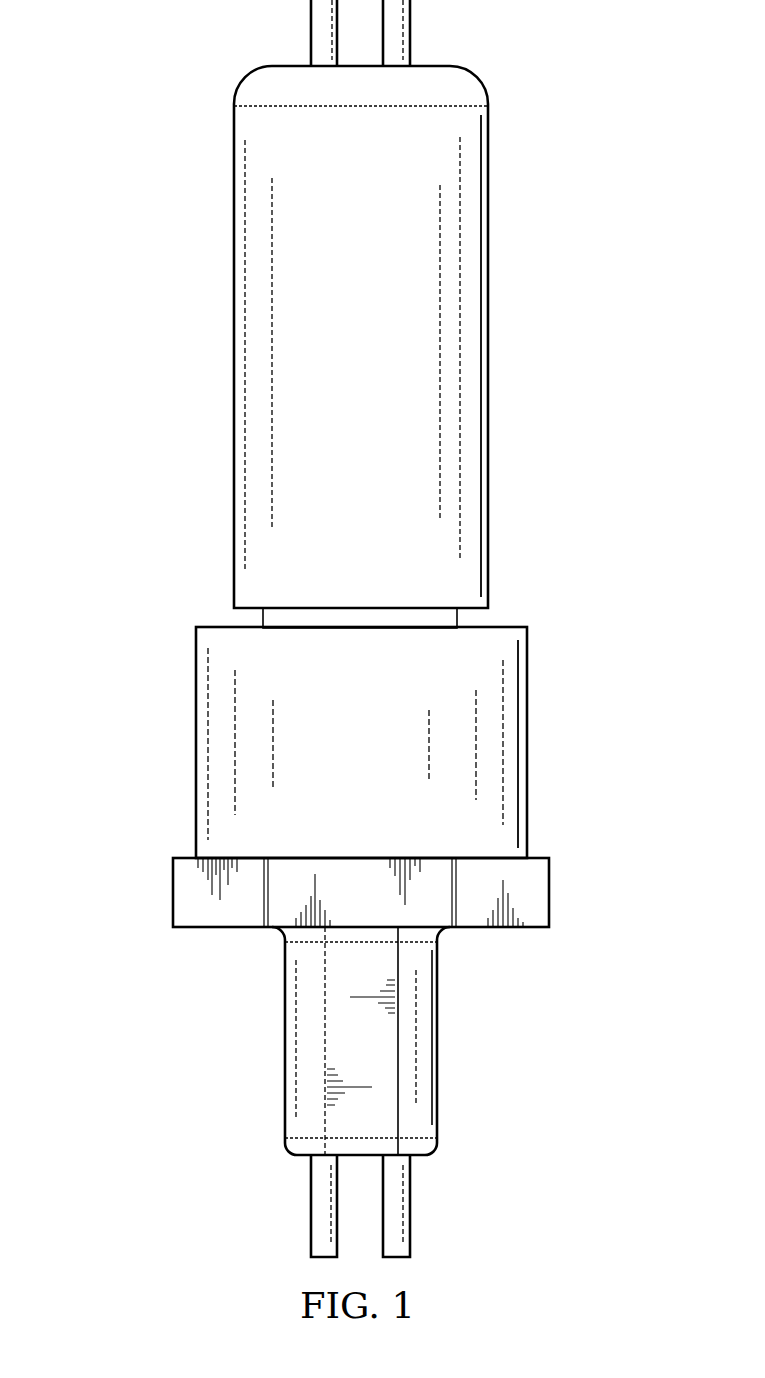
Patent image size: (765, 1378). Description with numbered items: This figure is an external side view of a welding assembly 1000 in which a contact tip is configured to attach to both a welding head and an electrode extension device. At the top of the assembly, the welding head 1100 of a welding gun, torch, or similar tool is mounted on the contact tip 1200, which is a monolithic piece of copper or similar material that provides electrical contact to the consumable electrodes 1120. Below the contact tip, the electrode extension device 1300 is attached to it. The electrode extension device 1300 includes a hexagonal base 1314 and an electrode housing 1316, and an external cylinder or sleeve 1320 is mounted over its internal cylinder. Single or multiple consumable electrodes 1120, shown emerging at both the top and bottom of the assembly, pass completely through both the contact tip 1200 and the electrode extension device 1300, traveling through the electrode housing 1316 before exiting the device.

The welding assembly 1000 is at (106, 110).
The welding head 1100 is at (502, 318).
The consumable electrodes 1120 is at (311, 27).
The contact tip 1200 is at (475, 614).
The electrode extension device 1300 is at (188, 745).
The hexagonal base 1314 is at (549, 893).
The electrode housing 1316 is at (437, 1040).
The external cylinder or sleeve 1320 is at (391, 758).